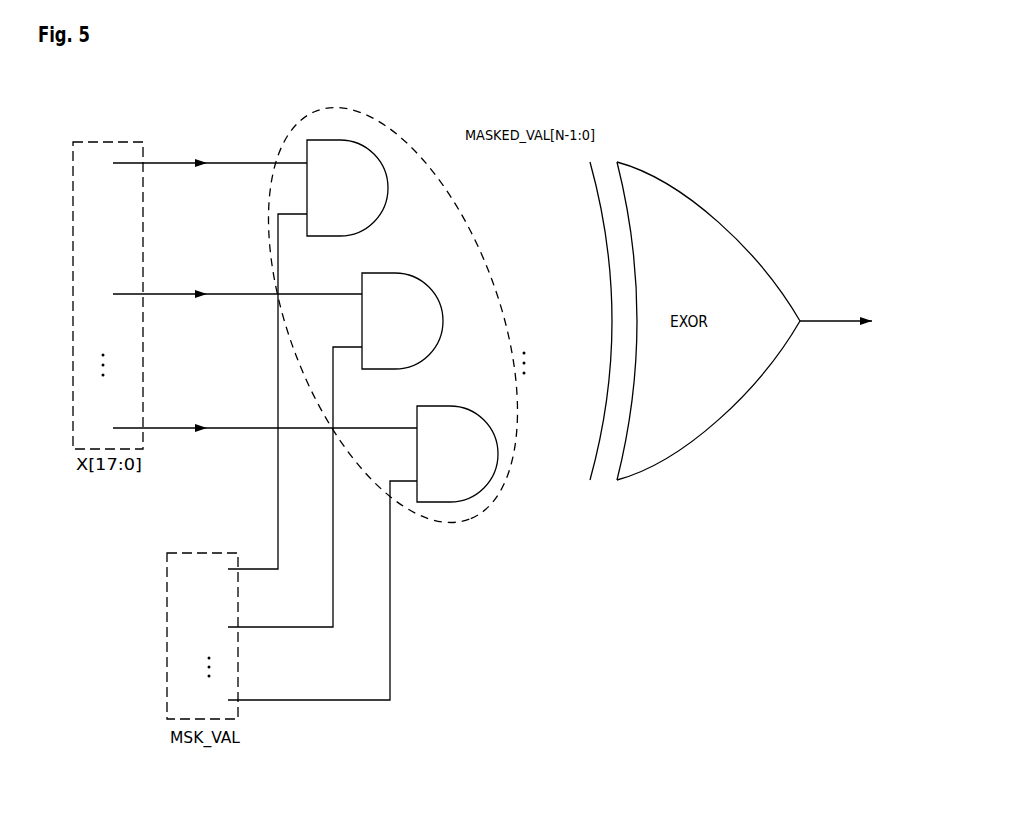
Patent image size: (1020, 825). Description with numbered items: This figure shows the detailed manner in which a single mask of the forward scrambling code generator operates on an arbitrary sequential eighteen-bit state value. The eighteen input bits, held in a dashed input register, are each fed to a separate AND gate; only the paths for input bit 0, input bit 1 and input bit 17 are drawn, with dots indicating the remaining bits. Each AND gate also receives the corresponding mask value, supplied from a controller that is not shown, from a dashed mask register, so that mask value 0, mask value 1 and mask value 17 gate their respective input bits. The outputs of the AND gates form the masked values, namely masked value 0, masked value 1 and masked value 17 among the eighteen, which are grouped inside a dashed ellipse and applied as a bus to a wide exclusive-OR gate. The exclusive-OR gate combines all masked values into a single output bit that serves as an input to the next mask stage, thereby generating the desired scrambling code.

The bit-zero mask path 0 is at (620, 188).
The bit-one mask path 1 is at (637, 321).
The bit-seventeen mask path 17 is at (620, 454).